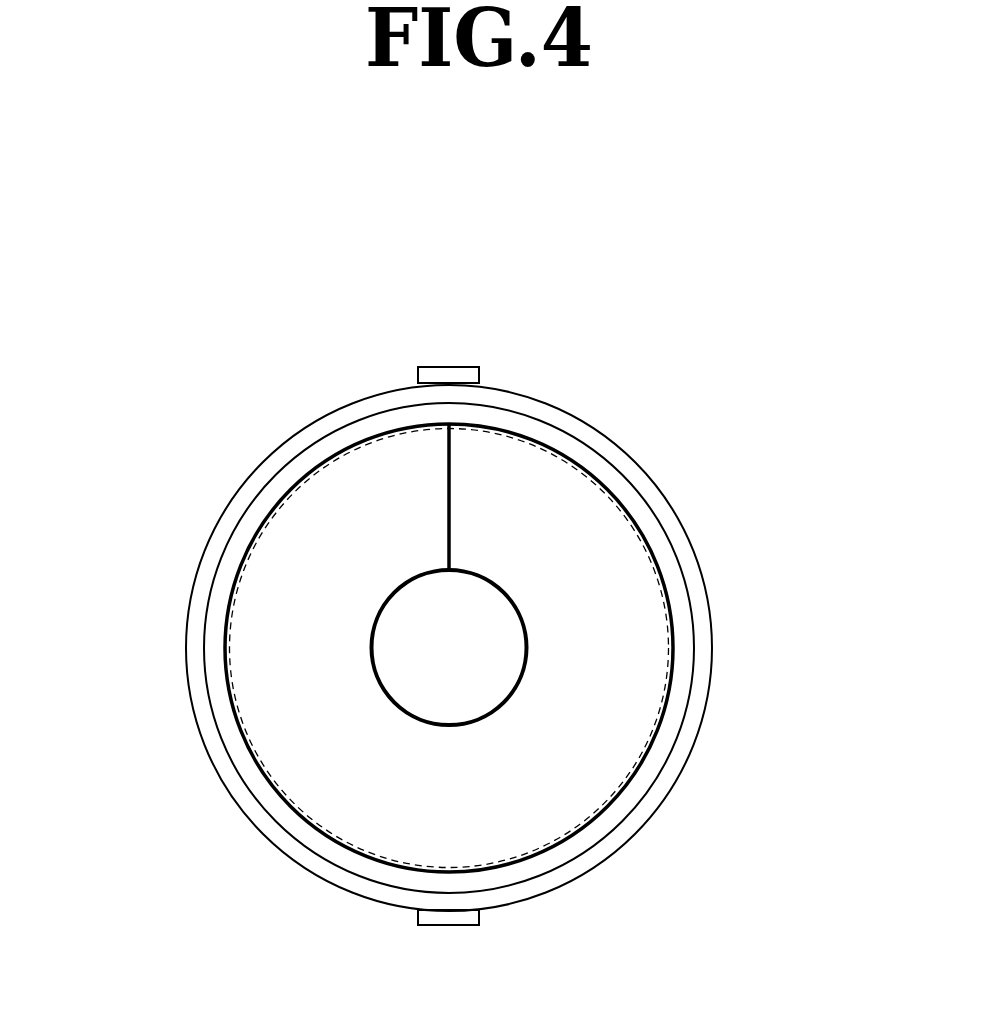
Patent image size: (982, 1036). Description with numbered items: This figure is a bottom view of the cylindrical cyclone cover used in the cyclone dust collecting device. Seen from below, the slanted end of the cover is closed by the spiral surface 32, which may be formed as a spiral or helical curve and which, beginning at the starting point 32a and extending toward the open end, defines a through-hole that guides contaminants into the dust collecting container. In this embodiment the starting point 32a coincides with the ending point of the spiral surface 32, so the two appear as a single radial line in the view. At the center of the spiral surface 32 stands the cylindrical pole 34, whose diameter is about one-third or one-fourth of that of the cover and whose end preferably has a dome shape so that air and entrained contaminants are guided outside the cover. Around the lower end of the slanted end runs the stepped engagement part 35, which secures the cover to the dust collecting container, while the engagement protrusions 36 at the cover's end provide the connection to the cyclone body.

The spiral surface 32 is at (260, 658).
The starting point 32a is at (451, 478).
The cylindrical pole 34 is at (503, 705).
The engagement part 35 is at (288, 436).
The engagement protrusions 36 is at (447, 367).